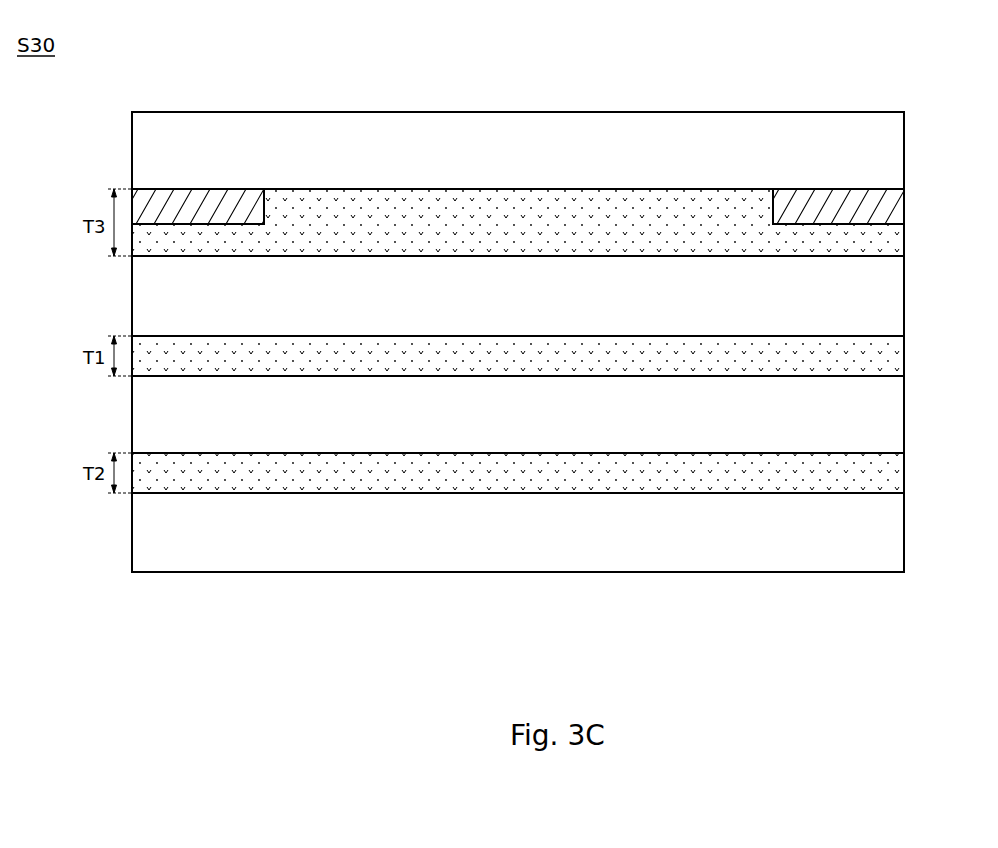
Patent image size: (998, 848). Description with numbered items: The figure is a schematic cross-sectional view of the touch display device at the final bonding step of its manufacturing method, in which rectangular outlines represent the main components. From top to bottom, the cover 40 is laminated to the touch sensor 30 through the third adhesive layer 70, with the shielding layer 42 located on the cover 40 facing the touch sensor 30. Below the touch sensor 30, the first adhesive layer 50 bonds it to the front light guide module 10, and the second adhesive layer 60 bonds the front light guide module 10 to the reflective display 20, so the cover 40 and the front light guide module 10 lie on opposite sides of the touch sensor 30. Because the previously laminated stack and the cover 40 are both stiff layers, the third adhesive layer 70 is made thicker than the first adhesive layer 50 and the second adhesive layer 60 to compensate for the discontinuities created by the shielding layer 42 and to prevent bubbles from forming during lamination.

The front light guide module 10 is at (898, 415).
The reflective display 20 is at (898, 533).
The touch sensor 30 is at (898, 296).
The cover 40 is at (898, 150).
The shielding layer 42 is at (898, 207).
The first adhesive layer 50 is at (898, 356).
The second adhesive layer 60 is at (898, 475).
The third adhesive layer 70 is at (898, 242).